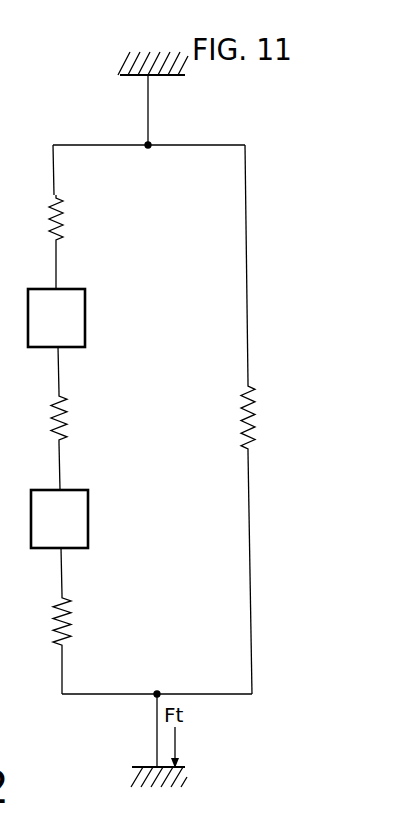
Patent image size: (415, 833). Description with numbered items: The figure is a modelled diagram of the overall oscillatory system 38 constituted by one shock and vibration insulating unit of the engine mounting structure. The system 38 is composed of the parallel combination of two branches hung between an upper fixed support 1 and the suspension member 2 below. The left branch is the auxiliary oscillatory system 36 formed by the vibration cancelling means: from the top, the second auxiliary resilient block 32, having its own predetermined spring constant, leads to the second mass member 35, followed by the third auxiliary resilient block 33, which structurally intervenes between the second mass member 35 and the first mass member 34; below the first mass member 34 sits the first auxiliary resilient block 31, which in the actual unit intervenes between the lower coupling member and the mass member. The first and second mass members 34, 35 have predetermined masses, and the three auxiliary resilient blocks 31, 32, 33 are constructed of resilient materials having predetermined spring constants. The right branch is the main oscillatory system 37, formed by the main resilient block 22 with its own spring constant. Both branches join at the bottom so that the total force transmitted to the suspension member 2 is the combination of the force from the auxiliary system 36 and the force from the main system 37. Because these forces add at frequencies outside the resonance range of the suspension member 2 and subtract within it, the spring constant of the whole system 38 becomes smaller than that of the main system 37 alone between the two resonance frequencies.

The fixed support (frame) 1 is at (180, 77).
The suspension member 2 is at (141, 766).
The main resilient block 22 is at (242, 403).
The first auxiliary resilient block 31 is at (70, 618).
The second auxiliary resilient block 32 is at (63, 215).
The third auxiliary resilient block 33 is at (67, 415).
The first mass member 34 is at (88, 522).
The second mass member 35 is at (86, 321).
The oscillatory system 36 is at (43, 147).
The oscillatory system 37 is at (256, 152).
The oscillatory system 38 is at (164, 389).